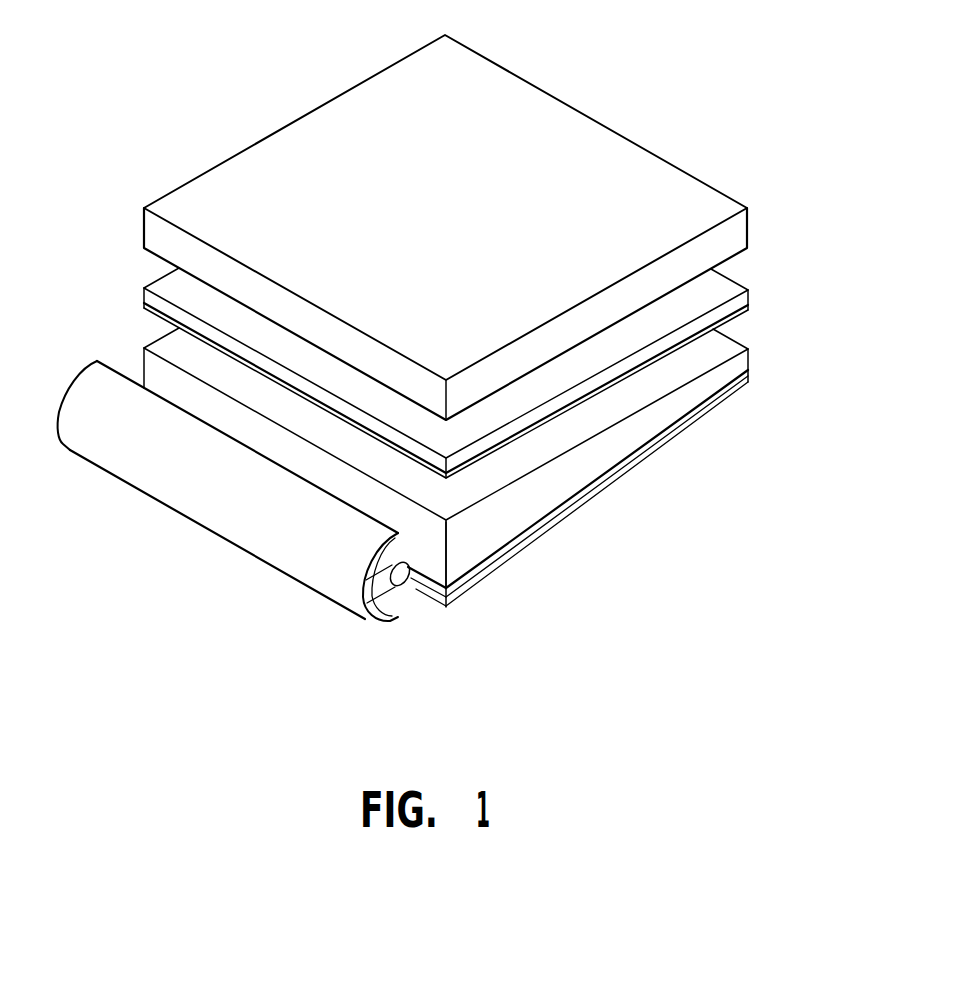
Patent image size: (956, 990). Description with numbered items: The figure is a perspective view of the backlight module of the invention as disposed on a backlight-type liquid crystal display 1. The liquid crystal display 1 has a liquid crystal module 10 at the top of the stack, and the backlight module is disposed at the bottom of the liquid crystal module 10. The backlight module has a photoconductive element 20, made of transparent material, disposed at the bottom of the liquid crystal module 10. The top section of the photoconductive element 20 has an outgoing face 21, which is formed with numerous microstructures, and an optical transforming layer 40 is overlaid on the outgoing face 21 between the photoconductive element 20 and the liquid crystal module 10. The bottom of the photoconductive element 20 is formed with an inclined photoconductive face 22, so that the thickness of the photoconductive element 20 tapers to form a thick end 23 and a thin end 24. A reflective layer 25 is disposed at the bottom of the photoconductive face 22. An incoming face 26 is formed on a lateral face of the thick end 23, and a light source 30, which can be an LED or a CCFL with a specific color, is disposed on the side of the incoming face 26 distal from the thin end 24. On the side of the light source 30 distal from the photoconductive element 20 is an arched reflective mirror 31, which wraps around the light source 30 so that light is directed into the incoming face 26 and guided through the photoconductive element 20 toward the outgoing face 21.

The liquid crystal display 1 is at (660, 130).
The liquid crystal module 10 is at (670, 193).
The optical transforming layer 40 is at (752, 297).
The photoconductive element 20 is at (487, 465).
The outgoing face 21 is at (705, 355).
The photoconductive face 22 is at (677, 420).
The thick end 23 is at (463, 552).
The thin end 24 is at (727, 367).
The reflective layer 25 is at (613, 483).
The incoming face 26 is at (414, 582).
The light source 30 is at (397, 620).
The arched reflective mirror 31 is at (300, 520).